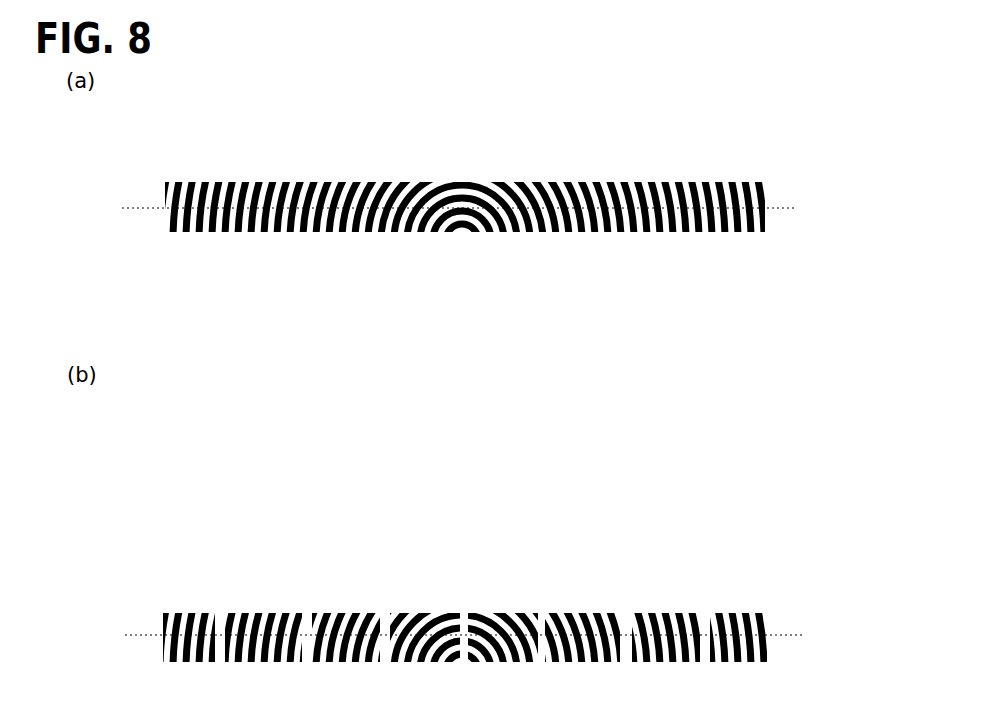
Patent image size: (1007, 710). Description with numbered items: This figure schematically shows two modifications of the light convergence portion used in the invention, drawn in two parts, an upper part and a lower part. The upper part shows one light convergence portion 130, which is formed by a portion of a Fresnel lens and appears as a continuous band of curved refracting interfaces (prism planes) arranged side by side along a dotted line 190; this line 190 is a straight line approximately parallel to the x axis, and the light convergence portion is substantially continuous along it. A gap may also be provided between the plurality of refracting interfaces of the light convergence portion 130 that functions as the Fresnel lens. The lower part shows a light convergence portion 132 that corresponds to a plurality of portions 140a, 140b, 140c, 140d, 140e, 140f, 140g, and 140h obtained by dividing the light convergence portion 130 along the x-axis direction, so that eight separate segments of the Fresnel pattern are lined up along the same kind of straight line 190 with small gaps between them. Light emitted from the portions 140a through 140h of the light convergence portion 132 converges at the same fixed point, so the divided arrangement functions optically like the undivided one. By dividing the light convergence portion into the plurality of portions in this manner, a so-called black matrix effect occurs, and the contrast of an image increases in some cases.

The light convergence portion 130 is at (798, 136).
The light convergence portion 132 is at (783, 460).
The line 190 is at (486, 422).
The portion 140a is at (193, 601).
The portion 140b is at (268, 603).
The portion 140c is at (347, 603).
The portion 140d is at (423, 603).
The portion 140e is at (505, 602).
The portion 140f is at (583, 602).
The portion 140g is at (660, 602).
The portion 140h is at (737, 602).